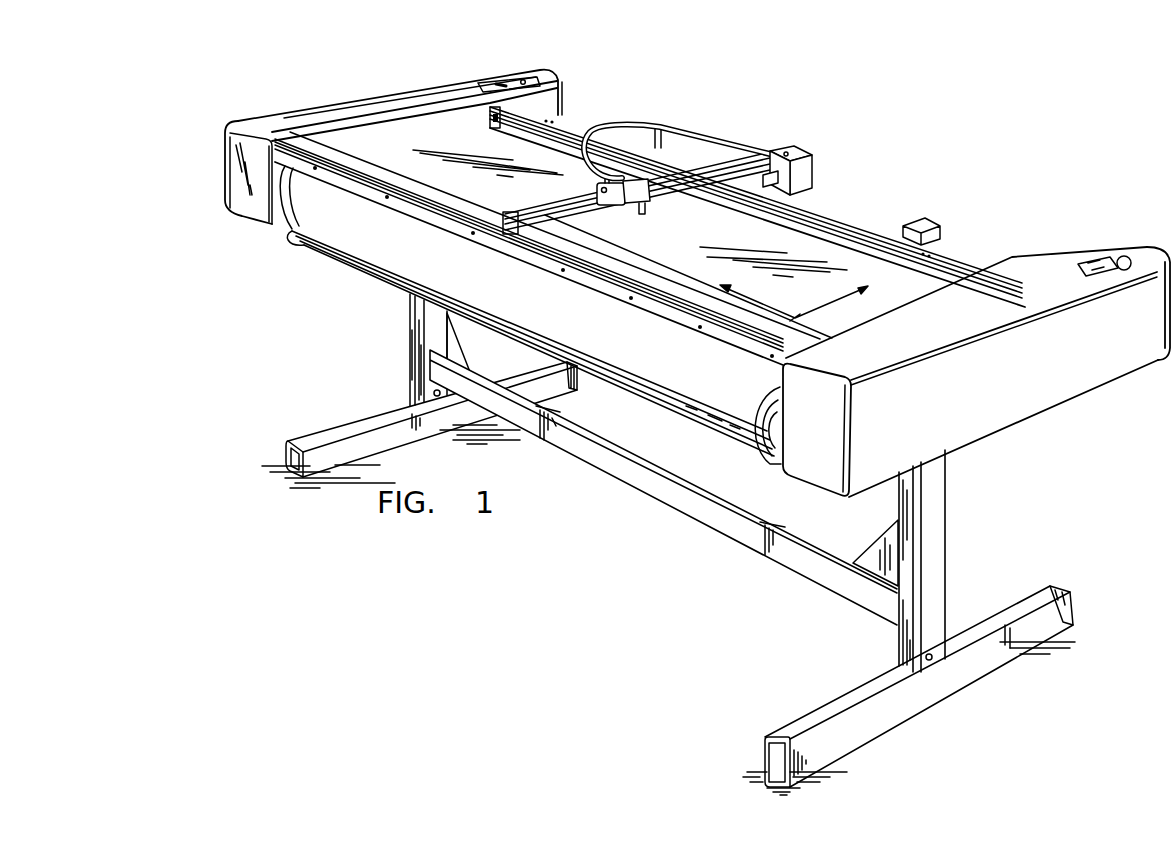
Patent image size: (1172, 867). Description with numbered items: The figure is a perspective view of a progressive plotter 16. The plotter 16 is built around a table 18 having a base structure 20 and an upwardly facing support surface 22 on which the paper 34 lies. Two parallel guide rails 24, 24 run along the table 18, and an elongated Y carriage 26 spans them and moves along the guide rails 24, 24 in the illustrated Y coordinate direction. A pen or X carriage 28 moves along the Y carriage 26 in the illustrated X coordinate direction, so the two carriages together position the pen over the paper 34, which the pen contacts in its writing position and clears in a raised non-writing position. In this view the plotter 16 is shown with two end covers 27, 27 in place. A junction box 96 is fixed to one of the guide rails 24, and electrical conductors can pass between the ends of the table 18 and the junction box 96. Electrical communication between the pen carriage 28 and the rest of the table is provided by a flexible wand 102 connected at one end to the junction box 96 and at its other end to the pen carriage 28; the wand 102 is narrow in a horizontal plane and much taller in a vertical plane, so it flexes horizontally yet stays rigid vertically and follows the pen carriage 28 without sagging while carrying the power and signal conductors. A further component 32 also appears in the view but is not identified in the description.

The progressive plotter 16 is at (677, 432).
The table 18 is at (1052, 272).
The base structure 20 is at (932, 494).
The support surface 22 is at (462, 135).
The guide rails 24 is at (617, 263).
The Y carriage 26 is at (558, 202).
The end covers 27 is at (230, 160).
The pen or X carriage 28 is at (640, 195).
The roller 32 is at (317, 227).
The paper 34 is at (382, 155).
The junction box 96 is at (793, 152).
The flexible wand 102 is at (742, 152).